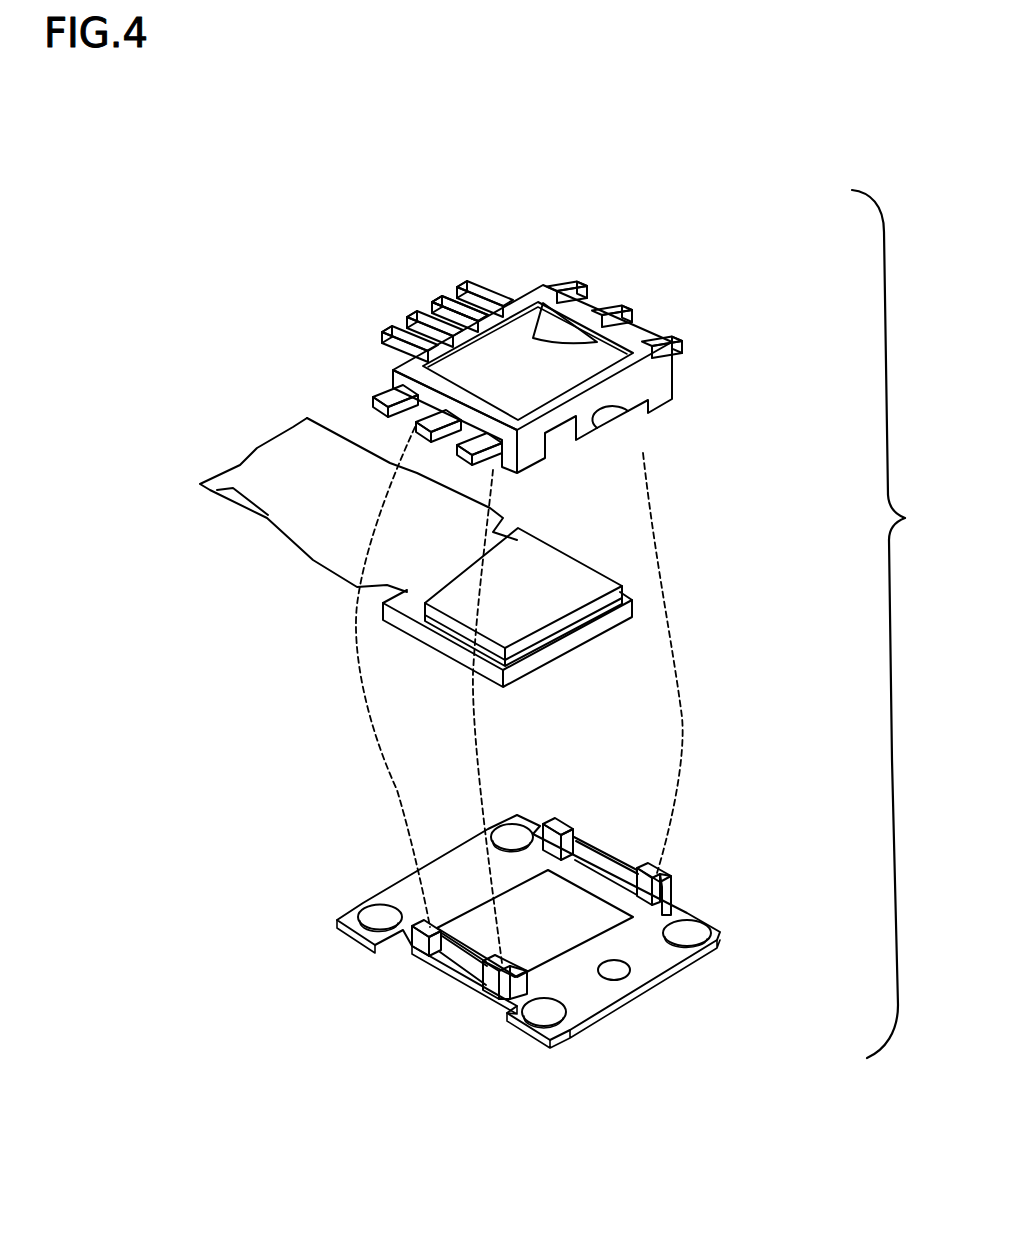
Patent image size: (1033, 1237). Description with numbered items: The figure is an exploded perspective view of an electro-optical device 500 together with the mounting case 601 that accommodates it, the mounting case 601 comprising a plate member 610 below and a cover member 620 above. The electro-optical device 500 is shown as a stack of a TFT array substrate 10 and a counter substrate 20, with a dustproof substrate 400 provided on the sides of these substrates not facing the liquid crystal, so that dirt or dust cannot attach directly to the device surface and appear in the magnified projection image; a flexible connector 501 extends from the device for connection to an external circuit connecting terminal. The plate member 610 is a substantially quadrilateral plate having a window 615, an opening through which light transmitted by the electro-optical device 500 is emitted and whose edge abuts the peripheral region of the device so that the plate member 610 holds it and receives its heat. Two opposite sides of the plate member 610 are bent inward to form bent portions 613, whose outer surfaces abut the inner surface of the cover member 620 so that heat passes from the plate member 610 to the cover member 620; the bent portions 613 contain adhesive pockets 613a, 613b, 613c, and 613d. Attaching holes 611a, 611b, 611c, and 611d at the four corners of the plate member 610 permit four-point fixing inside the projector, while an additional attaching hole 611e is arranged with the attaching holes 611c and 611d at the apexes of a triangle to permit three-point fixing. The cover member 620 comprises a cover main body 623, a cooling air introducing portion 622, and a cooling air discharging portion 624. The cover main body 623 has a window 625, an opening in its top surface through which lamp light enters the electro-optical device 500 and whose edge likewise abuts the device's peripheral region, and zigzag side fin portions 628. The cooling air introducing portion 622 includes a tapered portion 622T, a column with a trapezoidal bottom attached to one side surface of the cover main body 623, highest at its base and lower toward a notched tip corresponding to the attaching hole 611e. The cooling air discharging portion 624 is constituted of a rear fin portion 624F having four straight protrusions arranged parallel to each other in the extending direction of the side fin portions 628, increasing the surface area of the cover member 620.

The mounting case 601 is at (904, 624).
The cover member 620 is at (507, 324).
The cooling air introducing portion 622 is at (717, 332).
The tapered portion 622T is at (640, 399).
The cover main body 623 is at (717, 332).
The cooling air discharging portion 624 is at (488, 212).
The rear fin portion 624F is at (450, 300).
The window 625 is at (598, 294).
The side fin portions 628 is at (374, 400).
The flexible connector 501 is at (200, 484).
The electro-optical device 500 is at (616, 607).
The dustproof substrate 400 is at (595, 587).
The counter substrate 20 is at (617, 610).
The TFT array substrate 10 is at (587, 632).
The plate member 610 is at (561, 939).
The window 615 is at (532, 888).
The attaching hole 611a is at (560, 1037).
The attaching hole 611b is at (705, 922).
The attaching hole 611c is at (355, 909).
The attaching hole 611d is at (520, 823).
The attaching hole 611e is at (613, 972).
The bent portions 613 is at (463, 957).
The adhesive pocket 613a is at (487, 995).
The adhesive pocket 613b is at (670, 872).
The adhesive pocket 613c is at (412, 948).
The adhesive pocket 613d is at (578, 828).